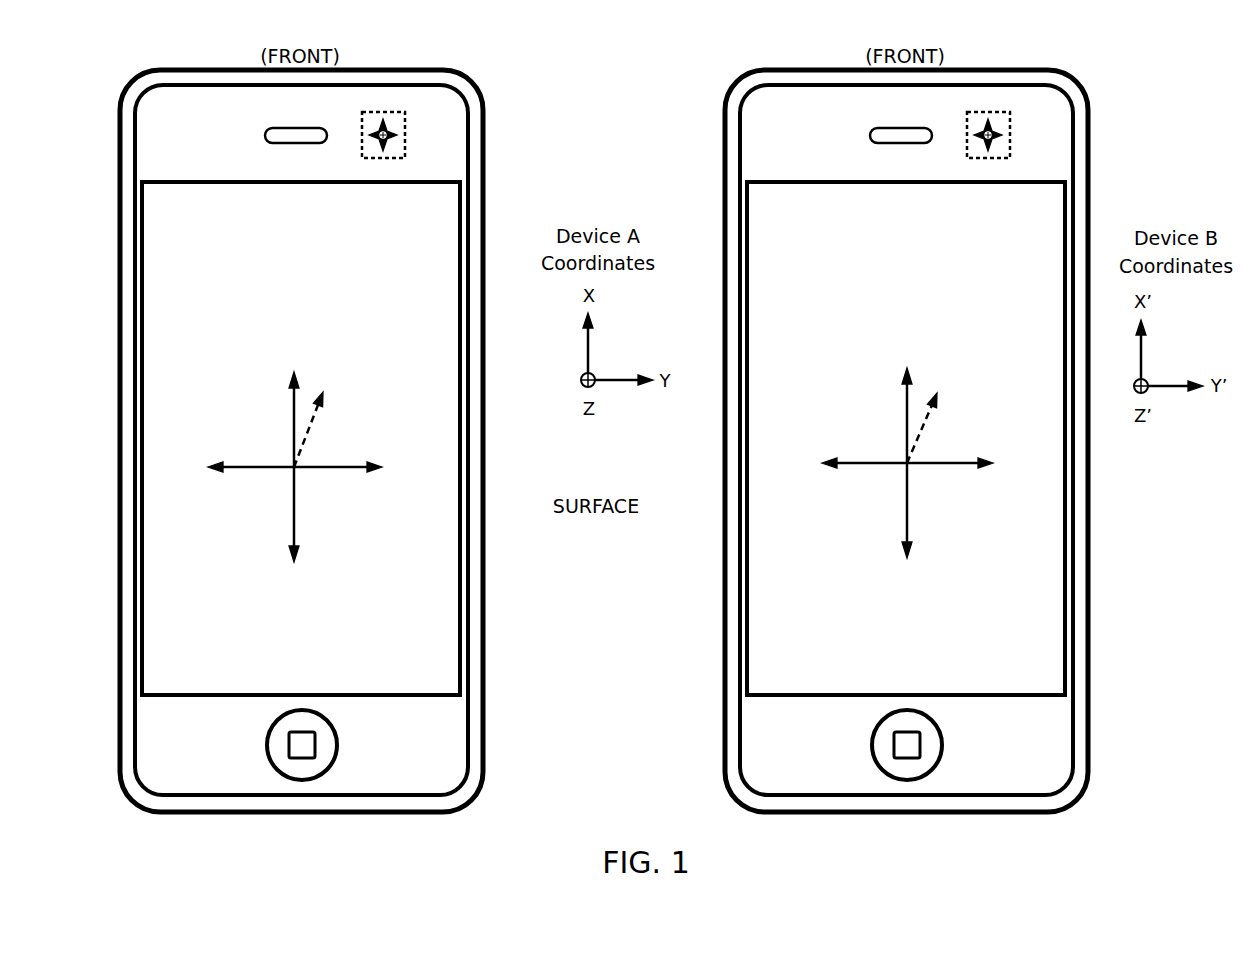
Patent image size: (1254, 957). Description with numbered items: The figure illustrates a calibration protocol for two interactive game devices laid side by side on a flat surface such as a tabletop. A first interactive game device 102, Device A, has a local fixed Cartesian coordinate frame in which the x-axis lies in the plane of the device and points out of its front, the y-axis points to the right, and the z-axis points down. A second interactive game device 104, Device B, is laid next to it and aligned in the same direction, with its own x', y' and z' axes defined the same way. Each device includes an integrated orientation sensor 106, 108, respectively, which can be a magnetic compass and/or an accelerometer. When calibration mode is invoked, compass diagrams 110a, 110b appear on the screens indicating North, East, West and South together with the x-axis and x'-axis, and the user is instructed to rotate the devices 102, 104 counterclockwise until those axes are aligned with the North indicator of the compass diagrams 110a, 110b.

The first interactive game device 102 is at (483, 770).
The second interactive game device 104 is at (1088, 773).
The integrated orientation sensor 106 is at (400, 134).
The integrated orientation sensor 108 is at (1005, 134).
The compass diagram 110a is at (253, 398).
The compass diagram 110b is at (867, 414).